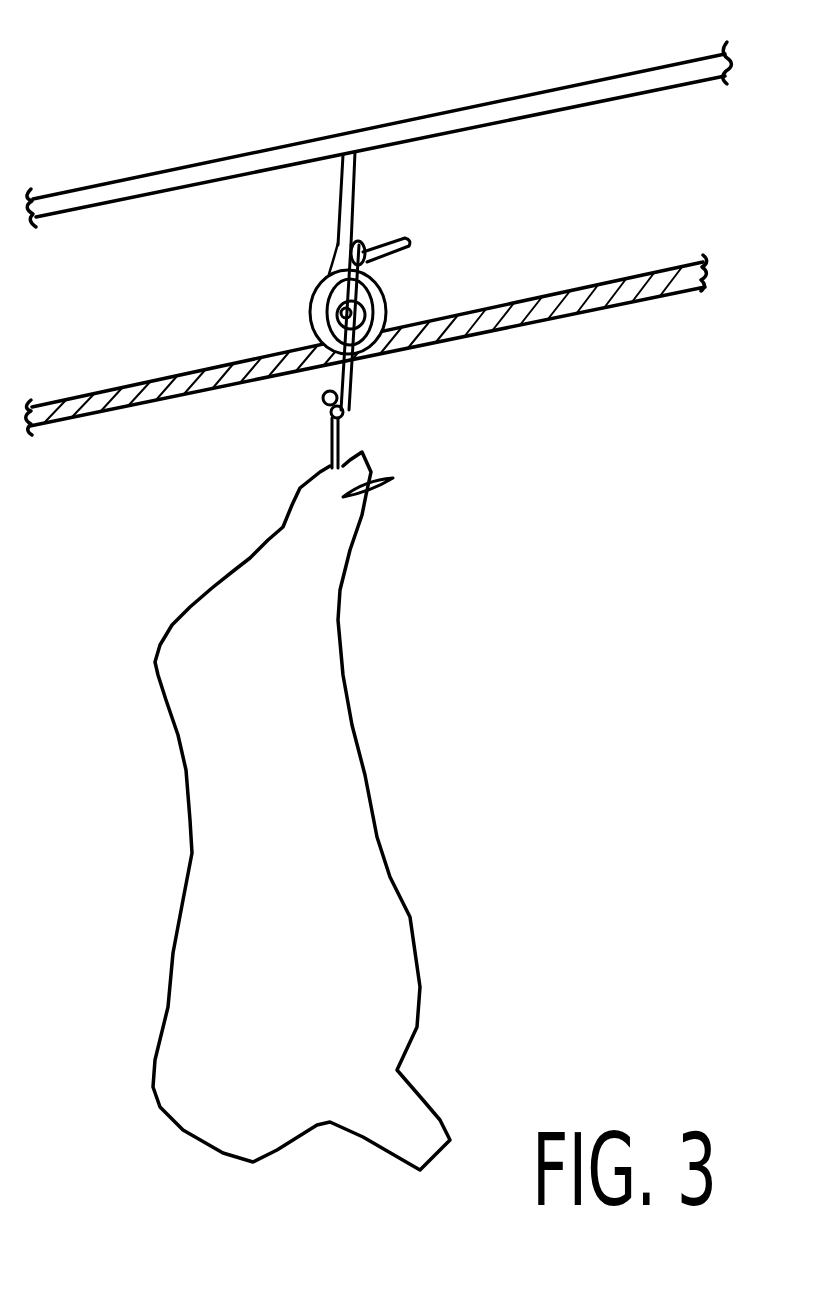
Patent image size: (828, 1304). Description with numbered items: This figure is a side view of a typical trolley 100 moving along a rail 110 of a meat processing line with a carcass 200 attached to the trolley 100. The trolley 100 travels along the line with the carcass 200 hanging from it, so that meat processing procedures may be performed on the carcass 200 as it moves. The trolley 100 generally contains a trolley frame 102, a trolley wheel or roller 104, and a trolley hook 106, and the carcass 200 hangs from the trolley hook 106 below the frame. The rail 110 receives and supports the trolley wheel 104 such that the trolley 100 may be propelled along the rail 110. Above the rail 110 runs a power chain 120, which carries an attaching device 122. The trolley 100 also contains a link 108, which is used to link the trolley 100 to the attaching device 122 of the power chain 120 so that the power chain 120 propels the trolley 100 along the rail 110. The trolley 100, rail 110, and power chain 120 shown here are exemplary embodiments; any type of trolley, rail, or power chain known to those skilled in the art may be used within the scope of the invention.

The trolley 100 is at (364, 331).
The trolley frame 102 is at (371, 268).
The trolley wheel 104 is at (366, 316).
The trolley hook 106 is at (338, 440).
The link 108 is at (337, 247).
The rail 110 is at (102, 416).
The power chain 120 is at (441, 112).
The attaching device 122 is at (351, 174).
The carcass 200 is at (320, 768).